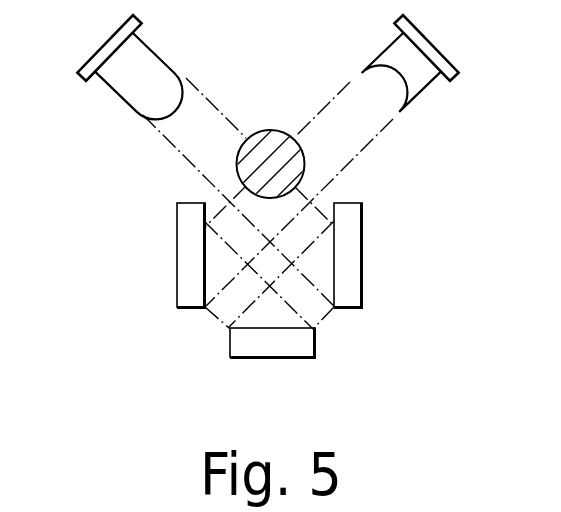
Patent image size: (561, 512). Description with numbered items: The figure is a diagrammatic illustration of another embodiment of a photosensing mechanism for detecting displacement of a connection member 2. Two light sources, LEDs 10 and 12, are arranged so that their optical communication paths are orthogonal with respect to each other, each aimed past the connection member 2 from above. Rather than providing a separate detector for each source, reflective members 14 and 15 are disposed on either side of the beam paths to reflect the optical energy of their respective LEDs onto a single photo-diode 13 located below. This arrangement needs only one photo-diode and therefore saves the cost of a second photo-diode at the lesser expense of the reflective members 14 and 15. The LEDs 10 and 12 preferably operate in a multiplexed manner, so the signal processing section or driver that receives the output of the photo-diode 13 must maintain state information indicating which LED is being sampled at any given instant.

The spherical sample 2 is at (279, 130).
The LED 10 is at (122, 99).
The LED 12 is at (418, 100).
The photo-diode 13 is at (280, 357).
The reflective member 14 is at (177, 240).
The reflective member 15 is at (362, 210).